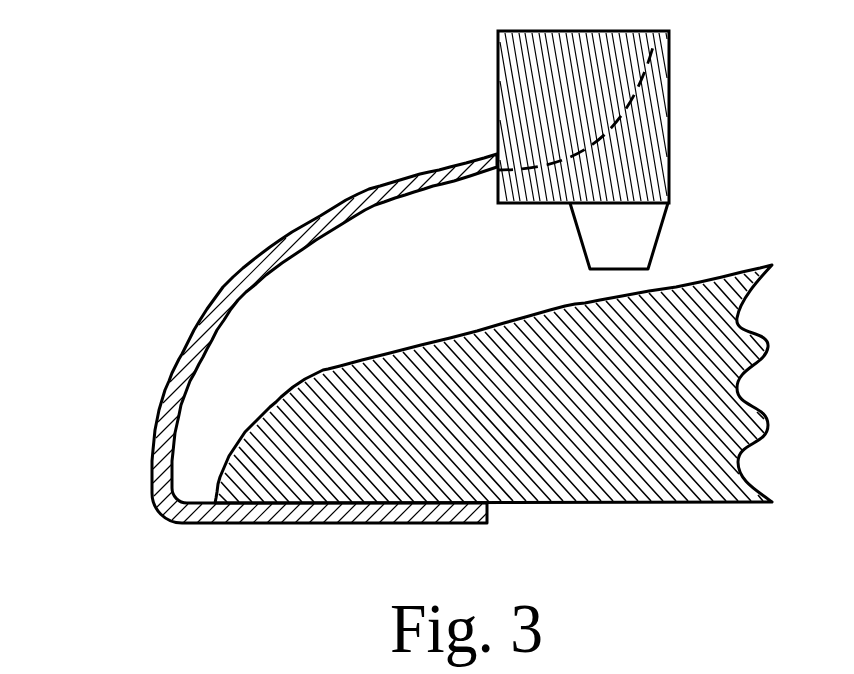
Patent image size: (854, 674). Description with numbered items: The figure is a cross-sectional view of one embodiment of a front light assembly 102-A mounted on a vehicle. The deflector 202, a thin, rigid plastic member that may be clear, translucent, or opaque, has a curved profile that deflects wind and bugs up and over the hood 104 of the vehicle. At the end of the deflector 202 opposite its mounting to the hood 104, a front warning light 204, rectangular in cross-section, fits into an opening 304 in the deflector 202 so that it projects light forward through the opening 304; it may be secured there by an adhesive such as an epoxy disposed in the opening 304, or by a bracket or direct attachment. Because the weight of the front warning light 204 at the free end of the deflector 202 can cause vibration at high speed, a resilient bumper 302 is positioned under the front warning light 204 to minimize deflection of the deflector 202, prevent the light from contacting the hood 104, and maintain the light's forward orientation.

The front light assembly 102-A is at (136, 96).
The deflector 202 is at (357, 195).
The hood 104 is at (333, 367).
The front warning light 204 is at (497, 82).
The opening 304 is at (493, 153).
The resilient bumper 302 is at (660, 238).